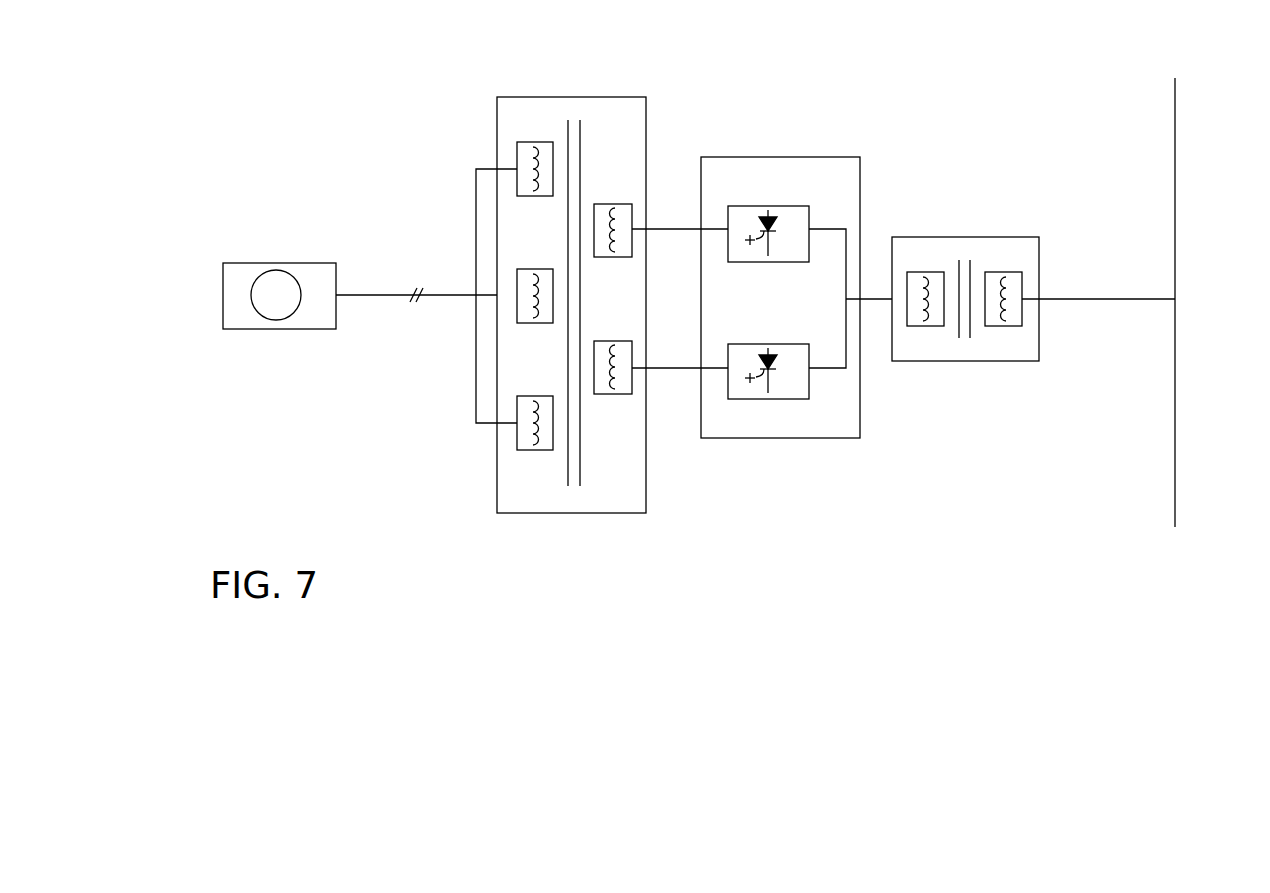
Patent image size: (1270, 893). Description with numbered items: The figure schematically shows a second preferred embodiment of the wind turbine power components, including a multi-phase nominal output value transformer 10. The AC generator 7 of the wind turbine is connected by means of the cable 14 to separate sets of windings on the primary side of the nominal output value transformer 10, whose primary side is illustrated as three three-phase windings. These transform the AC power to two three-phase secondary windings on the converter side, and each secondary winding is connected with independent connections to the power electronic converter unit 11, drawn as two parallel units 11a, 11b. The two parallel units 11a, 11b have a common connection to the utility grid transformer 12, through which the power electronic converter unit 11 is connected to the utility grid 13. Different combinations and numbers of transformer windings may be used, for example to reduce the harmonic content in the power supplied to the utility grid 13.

The AC generator 7 is at (303, 262).
The cable 14 is at (380, 295).
The nominal output value transformer 10 is at (602, 97).
The power electronic converter unit 11 is at (796, 258).
The power electronic converter unit 11a is at (750, 206).
The power electronic converter unit 11b is at (750, 344).
The utility grid transformer 12 is at (980, 237).
The utility grid 13 is at (1175, 150).